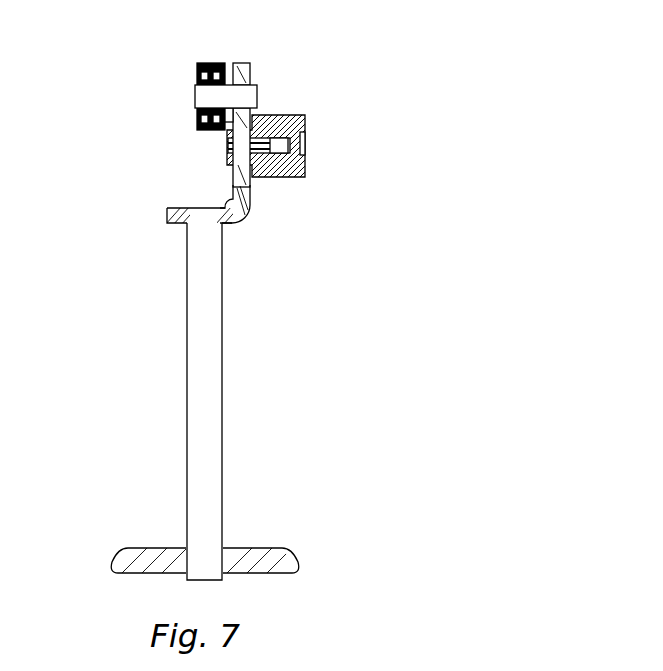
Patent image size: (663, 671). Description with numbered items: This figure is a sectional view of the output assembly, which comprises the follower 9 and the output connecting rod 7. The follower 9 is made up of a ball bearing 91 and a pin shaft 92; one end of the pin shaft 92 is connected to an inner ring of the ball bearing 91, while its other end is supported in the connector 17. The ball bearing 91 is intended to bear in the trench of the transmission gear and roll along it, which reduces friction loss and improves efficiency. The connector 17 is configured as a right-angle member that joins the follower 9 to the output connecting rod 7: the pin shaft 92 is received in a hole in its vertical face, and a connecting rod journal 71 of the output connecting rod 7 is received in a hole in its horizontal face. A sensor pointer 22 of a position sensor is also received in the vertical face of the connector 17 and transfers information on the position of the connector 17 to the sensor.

The output connecting rod 7 is at (202, 332).
The connecting rod journal 71 is at (205, 220).
The connector 17 is at (242, 192).
The sensor pointer 22 is at (262, 150).
The follower 9 is at (188, 70).
The ball bearing 91 is at (198, 68).
The pin shaft 92 is at (232, 99).